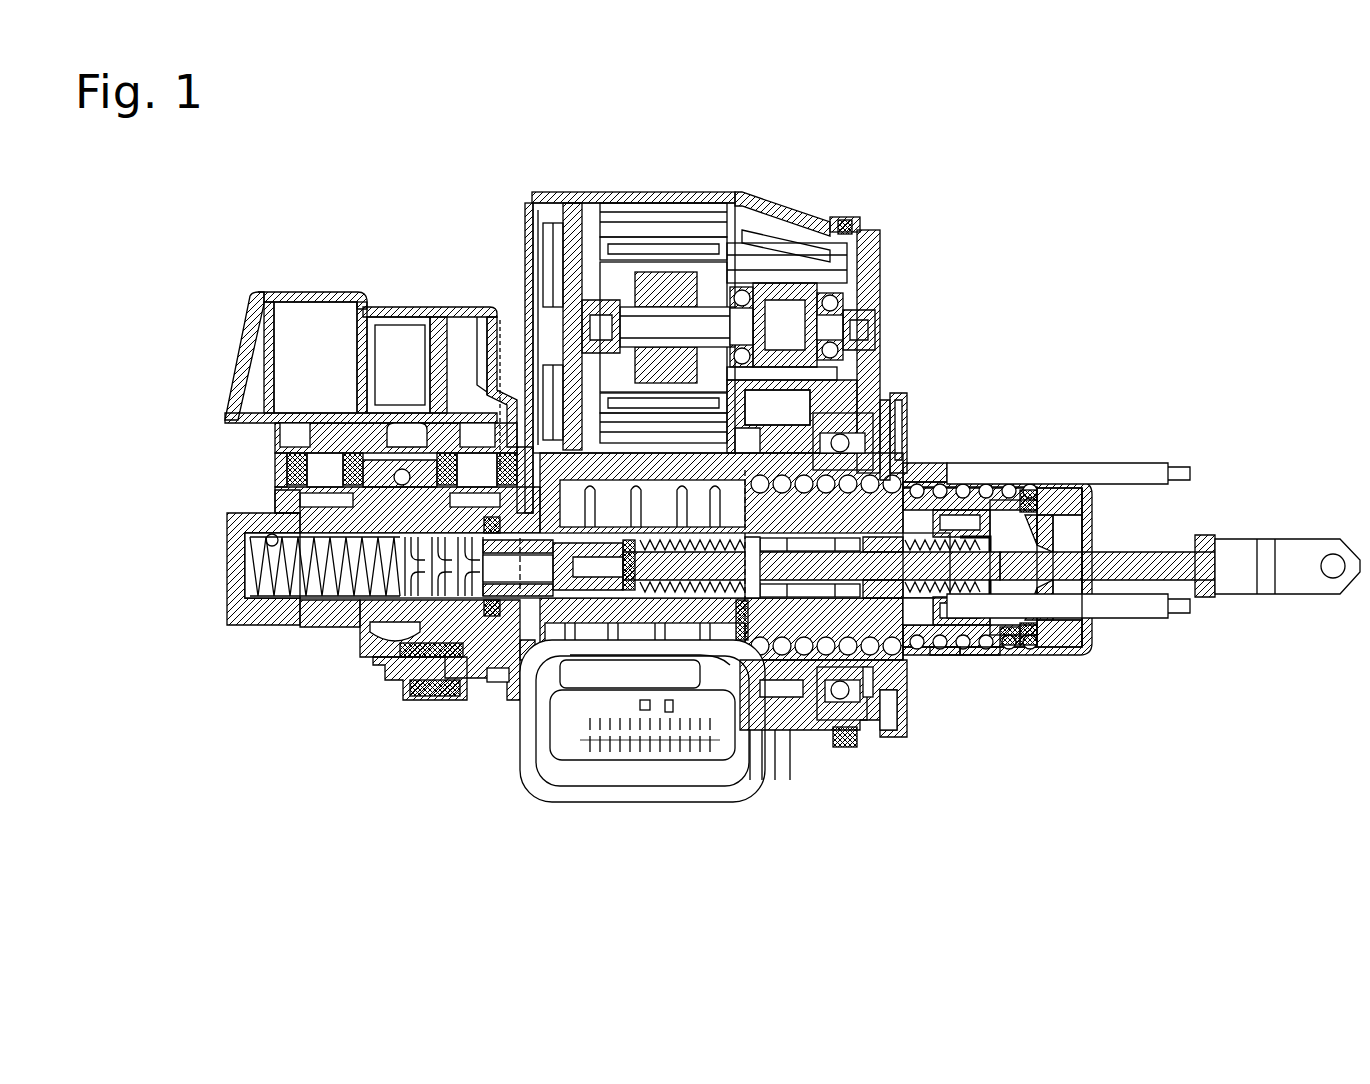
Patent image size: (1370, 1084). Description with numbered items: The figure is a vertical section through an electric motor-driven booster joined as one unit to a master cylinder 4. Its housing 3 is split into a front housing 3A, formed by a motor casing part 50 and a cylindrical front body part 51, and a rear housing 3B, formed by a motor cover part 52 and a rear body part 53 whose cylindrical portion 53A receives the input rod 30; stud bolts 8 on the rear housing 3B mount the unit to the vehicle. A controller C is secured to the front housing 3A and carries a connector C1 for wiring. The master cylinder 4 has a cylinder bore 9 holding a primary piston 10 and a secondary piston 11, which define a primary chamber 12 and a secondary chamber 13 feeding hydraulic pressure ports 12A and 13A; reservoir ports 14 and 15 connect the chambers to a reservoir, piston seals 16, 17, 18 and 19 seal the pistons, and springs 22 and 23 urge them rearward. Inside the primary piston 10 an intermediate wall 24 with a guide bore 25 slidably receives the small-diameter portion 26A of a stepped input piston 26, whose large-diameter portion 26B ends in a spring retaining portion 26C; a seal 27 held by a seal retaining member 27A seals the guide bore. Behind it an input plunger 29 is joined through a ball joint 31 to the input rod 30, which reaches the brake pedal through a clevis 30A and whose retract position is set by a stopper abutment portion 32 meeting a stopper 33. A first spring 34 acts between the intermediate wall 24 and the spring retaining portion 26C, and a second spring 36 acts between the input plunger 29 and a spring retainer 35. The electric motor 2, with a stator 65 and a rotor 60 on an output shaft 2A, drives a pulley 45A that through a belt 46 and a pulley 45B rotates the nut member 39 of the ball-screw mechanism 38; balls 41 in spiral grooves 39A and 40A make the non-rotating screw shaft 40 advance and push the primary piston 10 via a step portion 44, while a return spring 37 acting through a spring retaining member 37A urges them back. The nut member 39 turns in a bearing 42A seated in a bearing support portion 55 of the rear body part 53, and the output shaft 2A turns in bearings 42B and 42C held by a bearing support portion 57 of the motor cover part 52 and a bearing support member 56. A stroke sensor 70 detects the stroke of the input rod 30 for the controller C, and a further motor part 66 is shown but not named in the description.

The electric motor 2 is at (680, 192).
The output shaft 2A is at (715, 310).
The housing 3 is at (768, 760).
The front housing 3A is at (735, 740).
The rear housing 3B is at (770, 720).
The master cylinder 4 is at (235, 595).
The stud bolt 8 is at (1145, 463).
The cylinder bore 9 is at (285, 605).
The primary piston 10 is at (560, 580).
The secondary piston 11 is at (395, 655).
The primary chamber 12 is at (435, 700).
The hydraulic pressure port 12A is at (385, 455).
The secondary chamber 13 is at (250, 615).
The hydraulic pressure port 13A is at (272, 505).
The reservoir port 14 is at (440, 470).
The reservoir port 15 is at (330, 470).
The piston seal 16 is at (770, 590).
The piston seal 17 is at (525, 660).
The piston seal 18 is at (490, 598).
The piston seal 19 is at (405, 590).
The spring 22 is at (496, 682).
The spring 23 is at (265, 542).
The intermediate wall 24 is at (665, 548).
The guide bore 25 is at (488, 612).
The input piston 26 is at (700, 595).
The small-diameter portion 26A is at (625, 590).
The large-diameter portion 26B is at (750, 598).
The spring retaining portion 26C is at (960, 560).
The seal 27 is at (492, 617).
The seal retaining member 27A is at (500, 440).
The input plunger 29 is at (842, 720).
The input rod 30 is at (1140, 552).
The clevis 30A is at (1290, 545).
The ball joint 31 is at (920, 625).
The stopper abutment portion 32 is at (1050, 495).
The stopper 33 is at (1087, 657).
The first spring 34 is at (870, 592).
The spring retainer 35 is at (1030, 492).
The second spring 36 is at (945, 657).
The return spring 37 is at (540, 470).
The spring retaining member 37A is at (925, 465).
The ball-screw mechanism 38 is at (905, 450).
The nut member 39 is at (900, 700).
The spiral groove 39A is at (897, 705).
The screw shaft 40 is at (985, 484).
The spiral groove 40A is at (955, 485).
The balls 41 is at (812, 400).
The bearing 42A is at (850, 745).
The bearing 42B is at (875, 250).
The bearing 42C is at (785, 243).
The step portion 44 is at (975, 657).
The pulley 45A is at (805, 285).
The pulley 45B is at (790, 780).
The belt 46 is at (875, 325).
The motor casing part 50 is at (745, 287).
The front body part 51 is at (742, 642).
The motor cover part 52 is at (845, 300).
The rear body part 53 is at (870, 430).
The cylindrical portion 53A is at (1015, 650).
The bearing support portion 55 is at (890, 450).
The bearing support member 56 is at (790, 243).
The bearing support portion 57 is at (852, 222).
The rotor 60 is at (575, 260).
The stator 65 is at (655, 225).
The motor cover 66 is at (548, 215).
The stroke sensor 70 is at (528, 700).
The controller C is at (747, 665).
The connector C1 is at (528, 585).